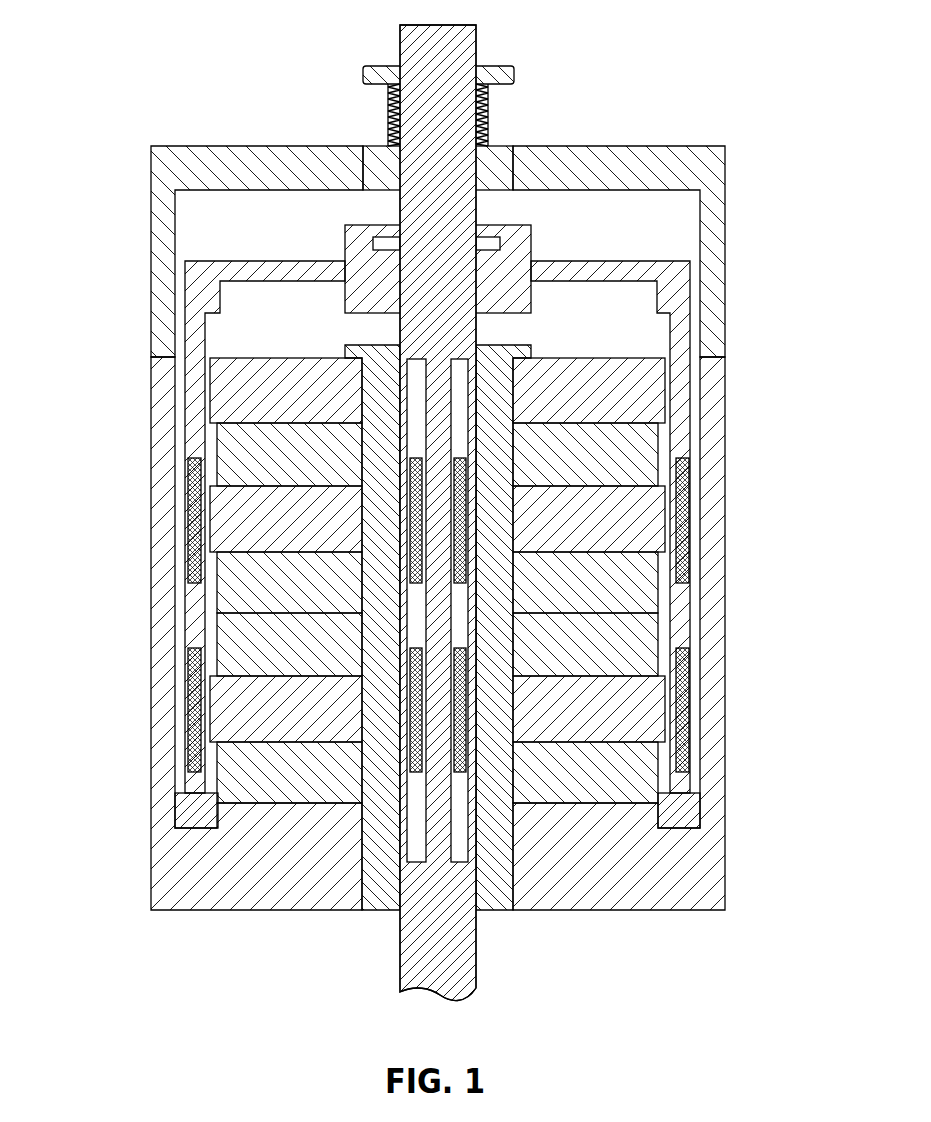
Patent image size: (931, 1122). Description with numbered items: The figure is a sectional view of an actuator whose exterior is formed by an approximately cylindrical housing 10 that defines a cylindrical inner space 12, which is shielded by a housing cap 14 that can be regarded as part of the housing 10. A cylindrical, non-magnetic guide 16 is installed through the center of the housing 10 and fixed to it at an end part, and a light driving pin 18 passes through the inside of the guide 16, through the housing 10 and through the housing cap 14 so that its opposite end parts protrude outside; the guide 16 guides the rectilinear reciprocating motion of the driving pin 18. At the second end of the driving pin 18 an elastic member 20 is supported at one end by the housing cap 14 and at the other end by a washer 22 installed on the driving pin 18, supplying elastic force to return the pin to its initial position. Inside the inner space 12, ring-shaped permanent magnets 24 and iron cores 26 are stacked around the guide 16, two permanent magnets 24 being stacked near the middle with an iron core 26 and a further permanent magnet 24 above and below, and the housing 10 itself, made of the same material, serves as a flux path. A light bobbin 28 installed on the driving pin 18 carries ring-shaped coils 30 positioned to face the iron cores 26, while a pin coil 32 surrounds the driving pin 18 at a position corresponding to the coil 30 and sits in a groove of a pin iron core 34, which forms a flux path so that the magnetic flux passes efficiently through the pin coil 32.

The housing 10 is at (151, 877).
The inner space 12 is at (195, 822).
The housing cap 14 is at (151, 243).
The guide 16 is at (360, 860).
The driving pin 18 is at (400, 27).
The elastic member 20 is at (388, 110).
The washer 22 is at (363, 72).
The permanent magnet 24 is at (653, 453).
The iron core 26 is at (225, 507).
The bobbin 28 is at (660, 296).
The coil 30 is at (683, 520).
The pin coil 32 is at (407, 460).
The pin iron core 34 is at (460, 843).